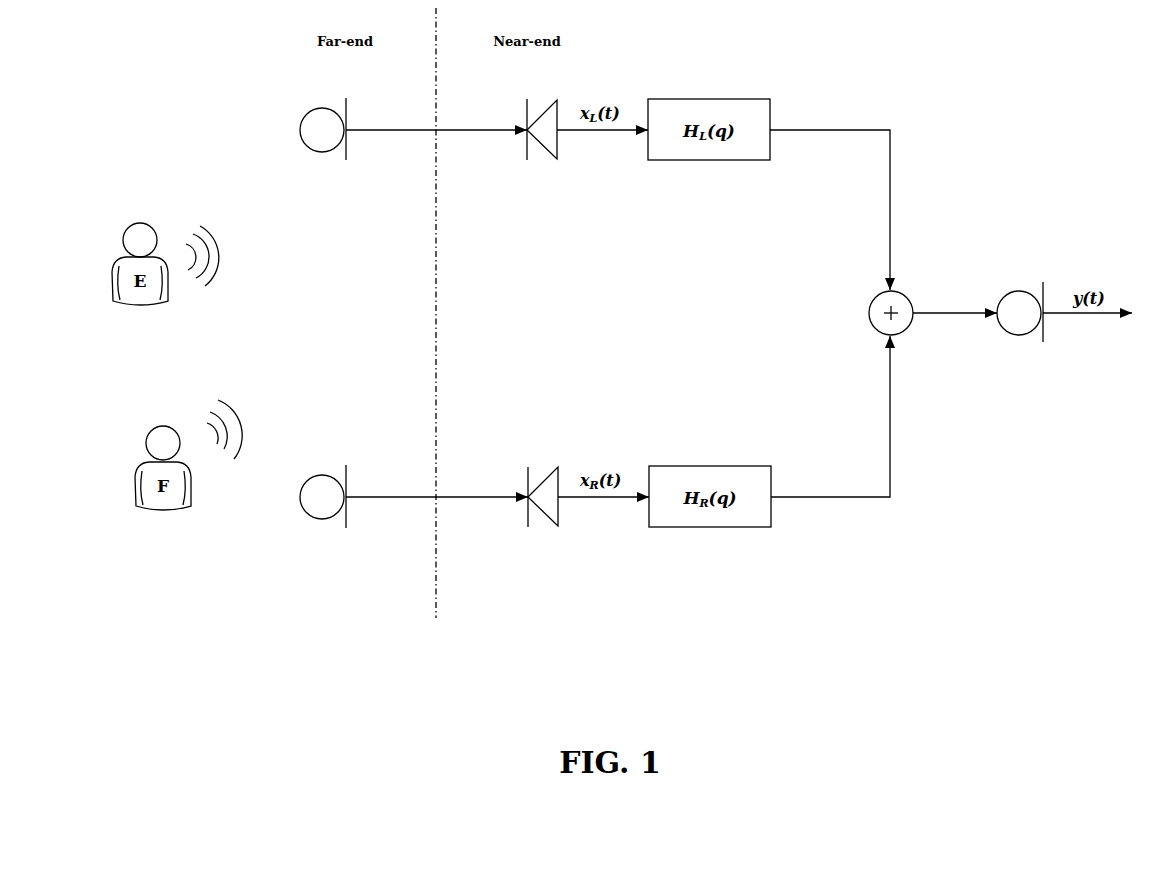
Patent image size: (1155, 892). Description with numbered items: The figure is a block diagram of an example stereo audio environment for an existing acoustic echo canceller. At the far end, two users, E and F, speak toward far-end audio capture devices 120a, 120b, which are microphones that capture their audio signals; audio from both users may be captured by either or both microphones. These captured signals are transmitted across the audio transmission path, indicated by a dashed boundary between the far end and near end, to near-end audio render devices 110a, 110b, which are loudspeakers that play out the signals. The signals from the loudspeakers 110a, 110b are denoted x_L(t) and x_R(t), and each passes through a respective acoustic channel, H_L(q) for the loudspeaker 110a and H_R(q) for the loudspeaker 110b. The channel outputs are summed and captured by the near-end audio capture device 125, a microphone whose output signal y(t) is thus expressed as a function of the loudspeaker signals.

The far-end audio capture device 120a is at (321, 153).
The far-end audio capture device 120b is at (321, 520).
The near-end audio render device 110a is at (549, 152).
The near-end audio render device 110b is at (549, 520).
The near-end audio capture device 125 is at (1020, 336).